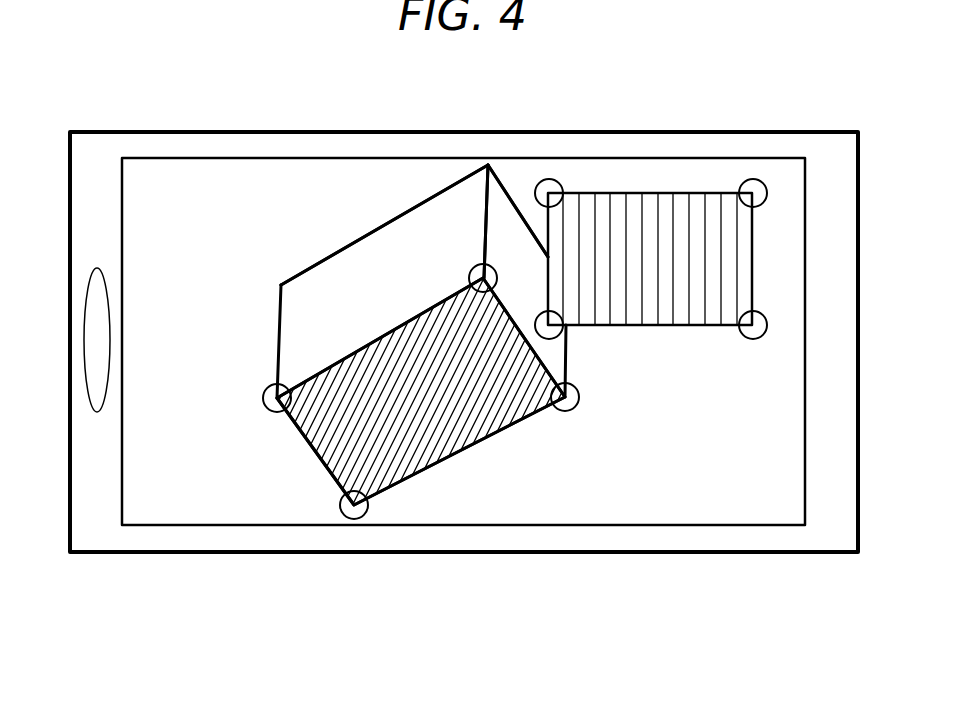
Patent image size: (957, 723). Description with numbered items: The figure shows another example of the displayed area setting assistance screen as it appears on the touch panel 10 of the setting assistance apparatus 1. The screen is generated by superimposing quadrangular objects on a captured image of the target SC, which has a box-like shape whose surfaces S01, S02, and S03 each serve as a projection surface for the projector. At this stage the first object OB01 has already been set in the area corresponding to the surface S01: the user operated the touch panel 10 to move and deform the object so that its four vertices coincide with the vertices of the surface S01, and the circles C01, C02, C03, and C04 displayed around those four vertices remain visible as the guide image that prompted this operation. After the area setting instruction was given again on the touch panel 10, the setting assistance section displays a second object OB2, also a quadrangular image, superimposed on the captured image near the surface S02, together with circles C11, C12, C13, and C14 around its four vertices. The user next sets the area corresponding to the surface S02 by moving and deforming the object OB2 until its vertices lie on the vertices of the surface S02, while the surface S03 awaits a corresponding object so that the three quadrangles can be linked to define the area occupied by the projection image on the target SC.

The setting assistance apparatus 1 is at (712, 108).
The touch panel 10 is at (200, 527).
The target SC is at (321, 255).
The surface S03 is at (403, 232).
The surface S02 is at (515, 235).
The surface S01 is at (421, 460).
The object OB01 is at (423, 440).
The object OB2 is at (657, 193).
The circle C01 is at (568, 412).
The circle C02 is at (487, 264).
The circle C03 is at (273, 412).
The circle C04 is at (357, 519).
The circle C11 is at (753, 339).
The circle C12 is at (760, 181).
The circle C13 is at (557, 183).
The circle C14 is at (553, 338).